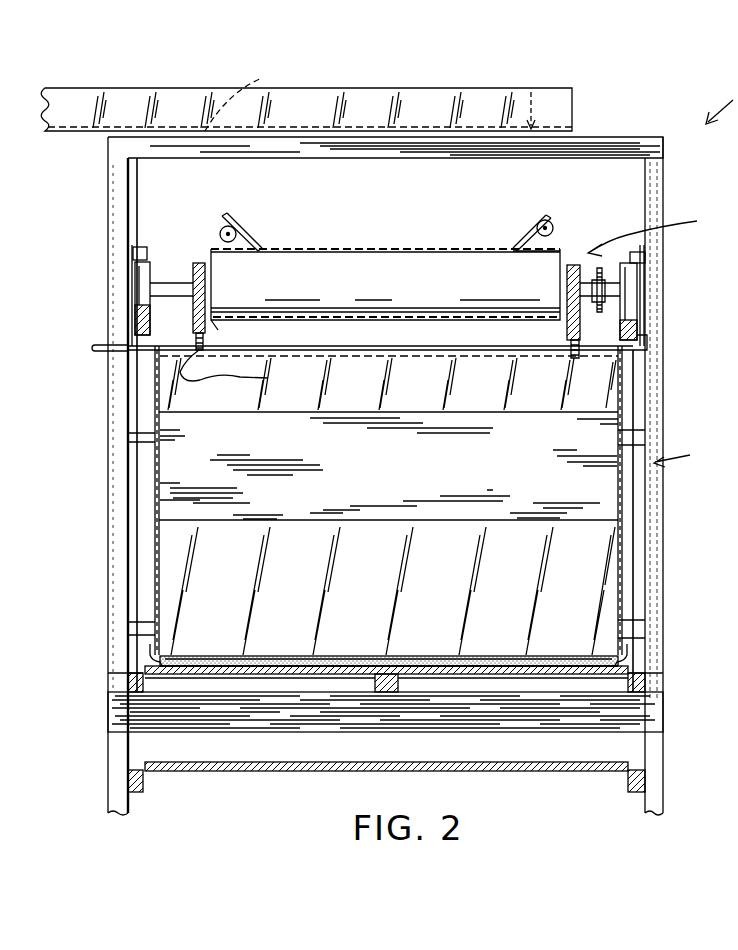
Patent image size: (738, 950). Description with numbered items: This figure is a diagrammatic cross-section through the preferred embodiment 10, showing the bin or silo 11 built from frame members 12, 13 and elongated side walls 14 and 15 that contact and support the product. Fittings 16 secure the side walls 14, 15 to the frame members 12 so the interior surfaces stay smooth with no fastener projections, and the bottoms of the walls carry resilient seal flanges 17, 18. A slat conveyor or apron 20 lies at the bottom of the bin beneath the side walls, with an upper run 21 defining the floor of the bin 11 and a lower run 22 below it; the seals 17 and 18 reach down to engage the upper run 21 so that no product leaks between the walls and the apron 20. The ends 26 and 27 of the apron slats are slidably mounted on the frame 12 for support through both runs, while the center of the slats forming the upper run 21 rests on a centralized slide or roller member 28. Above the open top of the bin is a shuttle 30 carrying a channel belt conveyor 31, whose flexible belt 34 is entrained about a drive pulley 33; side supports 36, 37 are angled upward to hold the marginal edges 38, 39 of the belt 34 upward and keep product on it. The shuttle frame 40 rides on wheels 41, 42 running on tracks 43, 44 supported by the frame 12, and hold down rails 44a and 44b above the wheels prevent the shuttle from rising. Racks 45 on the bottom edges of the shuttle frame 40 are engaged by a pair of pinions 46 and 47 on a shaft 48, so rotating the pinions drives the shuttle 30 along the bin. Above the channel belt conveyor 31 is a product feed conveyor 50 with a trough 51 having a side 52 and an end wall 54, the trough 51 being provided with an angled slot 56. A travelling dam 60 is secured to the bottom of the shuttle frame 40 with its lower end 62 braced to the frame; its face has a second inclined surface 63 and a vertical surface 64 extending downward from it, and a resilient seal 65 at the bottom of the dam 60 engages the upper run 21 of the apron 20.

The preferred embodiment 10 is at (719, 104).
The bin 11 is at (682, 455).
The frame members 12 is at (122, 498).
The frame members 13 is at (291, 752).
The side wall 14 is at (158, 464).
The side wall 15 is at (618, 492).
The fittings 16 is at (137, 436).
The resilient seal flange 17 is at (150, 655).
The resilient seal flange 18 is at (625, 660).
The slat conveyor 20 is at (306, 690).
The upper run 21 is at (358, 666).
The lower run 22 is at (326, 772).
The apron slat end 26 is at (128, 680).
The apron slat end 27 is at (640, 678).
The centralized slide or roller member 28 is at (390, 682).
The shuttle 30 is at (654, 233).
The channel belt conveyor 31 is at (522, 241).
The drive pulley 33 is at (385, 289).
The flexible belt 34 is at (405, 247).
The side support 36 is at (560, 225).
The side support 37 is at (219, 231).
The marginal edge 38 is at (550, 228).
The marginal edge 39 is at (238, 235).
The shuttle frame 40 is at (190, 264).
The wheel 41 is at (630, 290).
The wheel 42 is at (140, 288).
The track 43 is at (637, 336).
The track 44 is at (138, 322).
The hold down rail 44a is at (640, 248).
The hold down rail 44b is at (142, 250).
The rack 45 is at (212, 333).
The pinion 46 is at (582, 358).
The pinion 47 is at (237, 369).
The shaft 48 is at (94, 352).
The product feed conveyor 50 is at (590, 102).
The trough 51 is at (242, 97).
The trough side 52 is at (350, 118).
The end wall 54 is at (572, 115).
The slot 56 is at (536, 90).
The travelling dam 60 is at (410, 403).
The lower end of dam 62 is at (556, 655).
The second inclined surface 63 is at (392, 476).
The vertical surface 64 is at (432, 591).
The resilient seal 65 is at (428, 663).